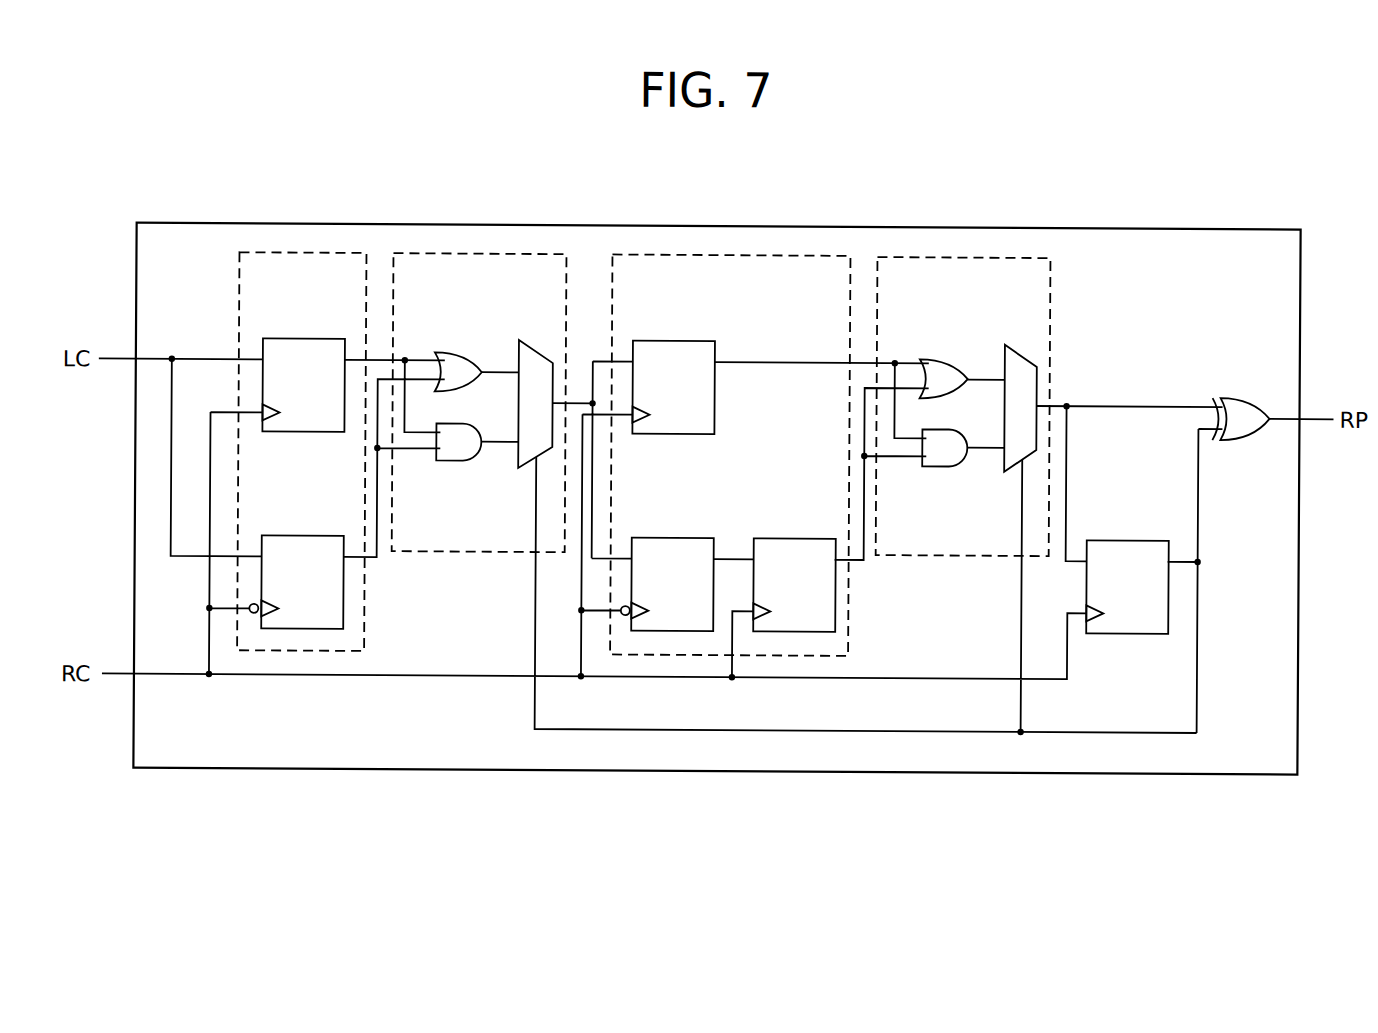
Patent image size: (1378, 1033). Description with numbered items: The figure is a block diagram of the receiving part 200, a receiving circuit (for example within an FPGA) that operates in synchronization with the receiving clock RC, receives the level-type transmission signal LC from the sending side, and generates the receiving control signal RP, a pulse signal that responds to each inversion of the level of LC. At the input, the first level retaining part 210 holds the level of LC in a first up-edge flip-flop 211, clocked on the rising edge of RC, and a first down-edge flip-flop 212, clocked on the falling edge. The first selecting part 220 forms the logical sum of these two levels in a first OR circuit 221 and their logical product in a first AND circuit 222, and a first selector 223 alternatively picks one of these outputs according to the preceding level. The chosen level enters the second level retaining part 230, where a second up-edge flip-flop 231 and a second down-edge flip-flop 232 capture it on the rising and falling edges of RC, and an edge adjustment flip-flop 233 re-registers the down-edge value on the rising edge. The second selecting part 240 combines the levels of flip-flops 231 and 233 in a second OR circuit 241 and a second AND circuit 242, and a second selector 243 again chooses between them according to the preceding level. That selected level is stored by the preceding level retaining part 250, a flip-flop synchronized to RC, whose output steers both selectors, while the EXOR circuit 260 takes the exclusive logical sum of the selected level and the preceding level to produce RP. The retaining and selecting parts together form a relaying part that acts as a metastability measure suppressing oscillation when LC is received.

The receiving part 200 is at (1100, 227).
The first level retaining part 210 is at (365, 627).
The first up-edge flip-flop 211 is at (301, 341).
The first down-edge flip-flop 212 is at (301, 538).
The first selecting part 220 is at (448, 553).
The first OR circuit 221 is at (452, 354).
The first AND circuit 222 is at (450, 464).
The first selector 223 is at (520, 343).
The second level retaining part 230 is at (849, 627).
The second up-edge flip-flop 231 is at (715, 314).
The second down-edge flip-flop 232 is at (672, 538).
The edge adjustment flip-flop 233 is at (782, 538).
The second selecting part 240 is at (940, 556).
The second OR circuit 241 is at (935, 358).
The second AND circuit 242 is at (935, 467).
The second selector 243 is at (1005, 344).
The preceding level retaining part 250 is at (1115, 538).
The EXOR circuit 260 is at (1232, 395).